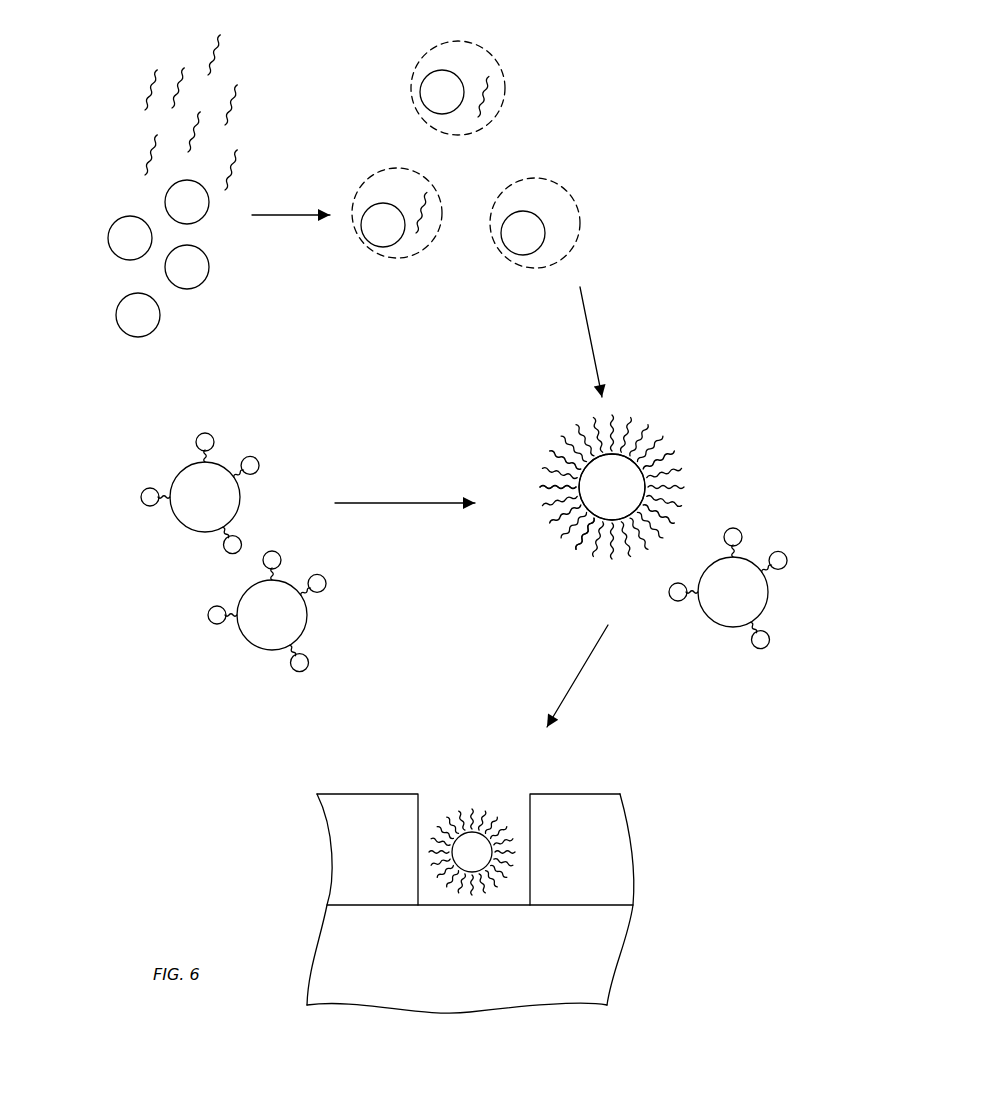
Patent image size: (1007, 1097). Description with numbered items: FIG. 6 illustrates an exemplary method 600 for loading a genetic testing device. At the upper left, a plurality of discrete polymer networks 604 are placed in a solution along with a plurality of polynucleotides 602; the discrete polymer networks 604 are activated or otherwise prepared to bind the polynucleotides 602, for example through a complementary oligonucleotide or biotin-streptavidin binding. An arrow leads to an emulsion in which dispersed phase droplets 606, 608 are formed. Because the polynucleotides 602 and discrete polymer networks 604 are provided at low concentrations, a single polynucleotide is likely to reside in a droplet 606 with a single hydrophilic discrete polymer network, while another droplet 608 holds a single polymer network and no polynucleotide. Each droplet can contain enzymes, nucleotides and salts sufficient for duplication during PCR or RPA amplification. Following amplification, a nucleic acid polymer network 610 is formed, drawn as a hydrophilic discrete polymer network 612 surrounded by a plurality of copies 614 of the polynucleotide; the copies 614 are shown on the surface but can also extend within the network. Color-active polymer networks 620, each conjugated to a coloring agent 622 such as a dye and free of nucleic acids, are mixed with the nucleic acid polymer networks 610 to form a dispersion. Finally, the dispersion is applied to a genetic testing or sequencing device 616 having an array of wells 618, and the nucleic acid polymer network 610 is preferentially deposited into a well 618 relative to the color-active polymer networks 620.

The process of forming functionalized nanoparticles 600 is at (640, 120).
The polynucleotides 602 is at (125, 128).
The discrete polymer networks 604 is at (222, 297).
The dispersed phase droplet 606 is at (498, 70).
The droplet 608 is at (578, 207).
The nucleic acid polymer network 610 is at (696, 440).
The hydrophilic discrete polymer network 612 is at (620, 480).
The copies of the polynucleotide 614 is at (540, 488).
The genetic testing device 616 is at (630, 895).
The wells 618 is at (512, 798).
The color-active polymer networks 620 is at (178, 465).
The coloring agent 622 is at (135, 507).